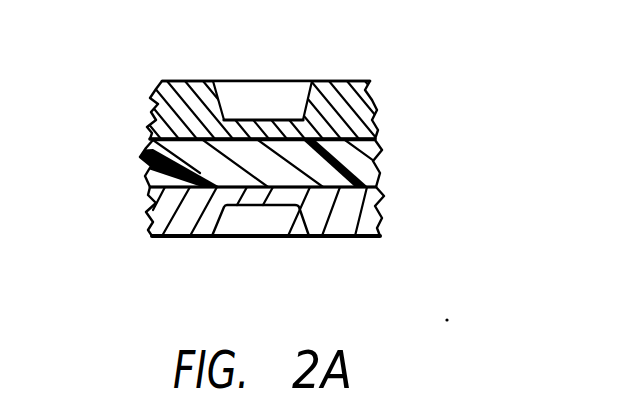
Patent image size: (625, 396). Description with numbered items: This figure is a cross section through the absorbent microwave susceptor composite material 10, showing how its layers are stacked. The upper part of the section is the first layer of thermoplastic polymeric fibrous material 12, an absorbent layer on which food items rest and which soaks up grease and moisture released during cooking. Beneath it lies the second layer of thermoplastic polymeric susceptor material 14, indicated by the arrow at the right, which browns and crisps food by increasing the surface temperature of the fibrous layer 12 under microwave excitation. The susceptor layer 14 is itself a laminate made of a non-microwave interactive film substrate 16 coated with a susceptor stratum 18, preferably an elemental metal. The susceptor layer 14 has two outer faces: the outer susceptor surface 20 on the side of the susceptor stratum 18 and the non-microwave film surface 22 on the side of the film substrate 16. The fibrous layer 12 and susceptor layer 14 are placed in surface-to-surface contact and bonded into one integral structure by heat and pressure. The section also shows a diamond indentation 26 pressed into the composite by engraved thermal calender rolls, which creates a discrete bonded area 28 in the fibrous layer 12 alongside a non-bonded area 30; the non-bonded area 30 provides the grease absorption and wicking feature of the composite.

The absorbent microwave susceptor composite material 10 is at (112, 66).
The first layer of thermoplastic polymeric fibrous material 12 is at (362, 108).
The second layer of thermoplastic polymeric susceptor material 14 is at (431, 175).
The non-microwave interactive film substrate 16 is at (378, 153).
The susceptor stratum 18 is at (383, 218).
The outer susceptor surface 20 is at (173, 238).
The non-microwave film surface 22 is at (147, 160).
The diamond indentation 26 is at (304, 119).
The bonded area 28 is at (225, 119).
The non-bonded area 30 is at (350, 81).